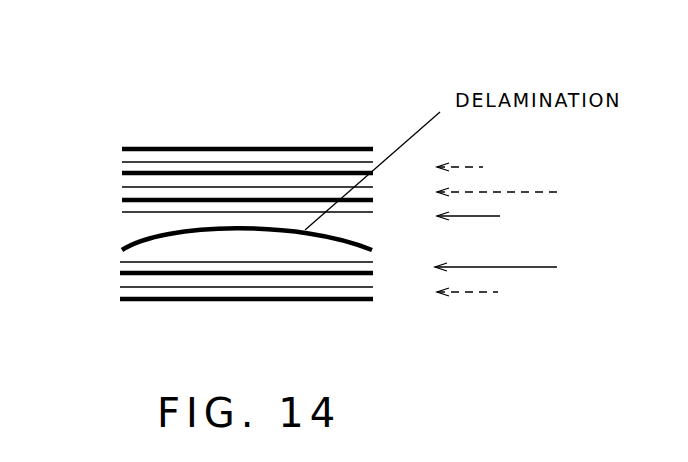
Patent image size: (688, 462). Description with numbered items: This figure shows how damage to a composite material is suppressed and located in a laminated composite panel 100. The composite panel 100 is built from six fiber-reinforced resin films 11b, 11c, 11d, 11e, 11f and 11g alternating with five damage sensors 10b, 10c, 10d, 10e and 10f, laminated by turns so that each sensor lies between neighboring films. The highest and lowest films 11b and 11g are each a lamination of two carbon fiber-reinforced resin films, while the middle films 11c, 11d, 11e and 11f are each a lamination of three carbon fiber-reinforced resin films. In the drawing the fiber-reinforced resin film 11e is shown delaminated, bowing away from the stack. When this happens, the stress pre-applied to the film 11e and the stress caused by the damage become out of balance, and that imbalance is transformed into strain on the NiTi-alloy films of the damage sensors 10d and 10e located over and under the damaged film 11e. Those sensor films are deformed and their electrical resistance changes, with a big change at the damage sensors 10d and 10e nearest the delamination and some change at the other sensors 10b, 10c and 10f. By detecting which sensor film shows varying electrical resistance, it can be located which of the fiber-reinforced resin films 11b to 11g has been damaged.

The composite panel 100 is at (302, 116).
The damage sensor 10b is at (188, 162).
The damage sensor 10c is at (120, 186).
The damage sensor 10d is at (130, 212).
The damage sensor 10e is at (353, 265).
The damage sensor 10f is at (120, 288).
The fiber-reinforced resin film 11b is at (267, 149).
The fiber-reinforced resin film 11c is at (323, 173).
The fiber-reinforced resin film 11d is at (120, 200).
The fiber-reinforced resin film 11e is at (207, 228).
The fiber-reinforced resin film 11f is at (118, 267).
The fiber-reinforced resin film 11g is at (270, 300).